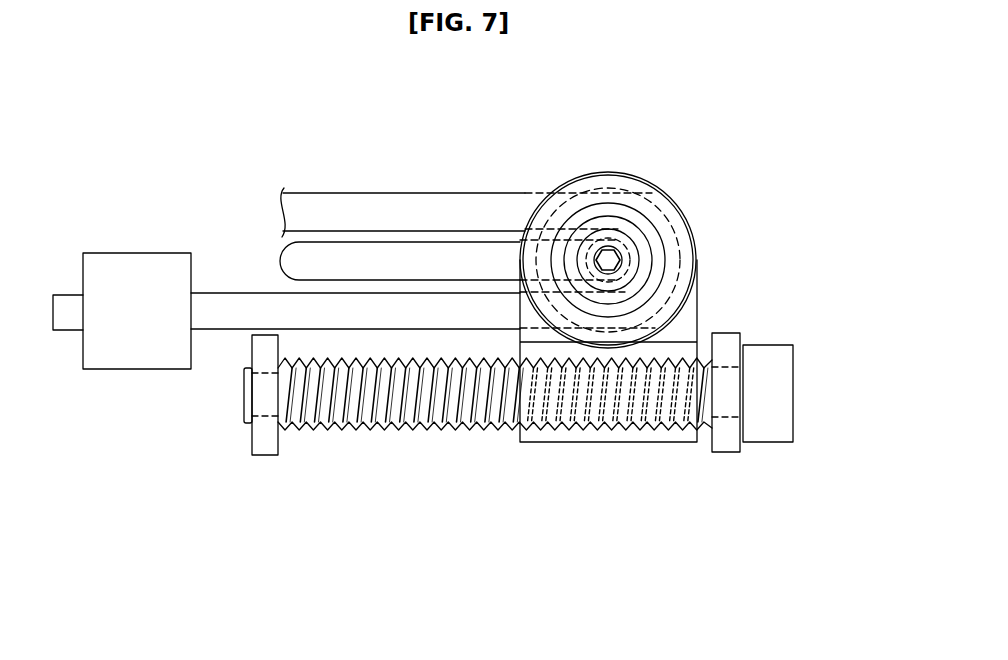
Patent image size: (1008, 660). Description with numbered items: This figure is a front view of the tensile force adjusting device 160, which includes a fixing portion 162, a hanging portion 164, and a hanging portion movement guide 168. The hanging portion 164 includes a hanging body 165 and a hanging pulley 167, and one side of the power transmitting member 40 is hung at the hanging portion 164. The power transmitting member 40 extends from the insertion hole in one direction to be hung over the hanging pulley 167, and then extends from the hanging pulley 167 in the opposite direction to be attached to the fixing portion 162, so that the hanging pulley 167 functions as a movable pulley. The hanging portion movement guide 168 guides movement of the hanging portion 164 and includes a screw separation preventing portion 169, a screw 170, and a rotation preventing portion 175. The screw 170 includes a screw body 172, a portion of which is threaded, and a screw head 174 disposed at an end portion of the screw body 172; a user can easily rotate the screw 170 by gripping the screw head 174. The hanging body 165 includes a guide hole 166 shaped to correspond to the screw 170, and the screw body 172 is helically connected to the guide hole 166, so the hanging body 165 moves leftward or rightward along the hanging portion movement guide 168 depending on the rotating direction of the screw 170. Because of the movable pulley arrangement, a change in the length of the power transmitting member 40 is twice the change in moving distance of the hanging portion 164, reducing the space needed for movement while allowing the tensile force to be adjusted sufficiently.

The power transmitting member 40 is at (402, 200).
The tensile force adjusting device 160 is at (303, 154).
The fixing portion 162 is at (140, 258).
The hanging portion 164 is at (790, 142).
The hanging body 165 is at (693, 292).
The guide hole 166 is at (668, 365).
The hanging pulley 167 is at (667, 212).
The hanging portion movement guide 168 is at (665, 573).
The screw separation preventing portion 169 is at (272, 443).
The screw 170 is at (705, 518).
The screw body 172 is at (497, 427).
The screw head 174 is at (768, 436).
The rotation preventing portion 175 is at (376, 268).